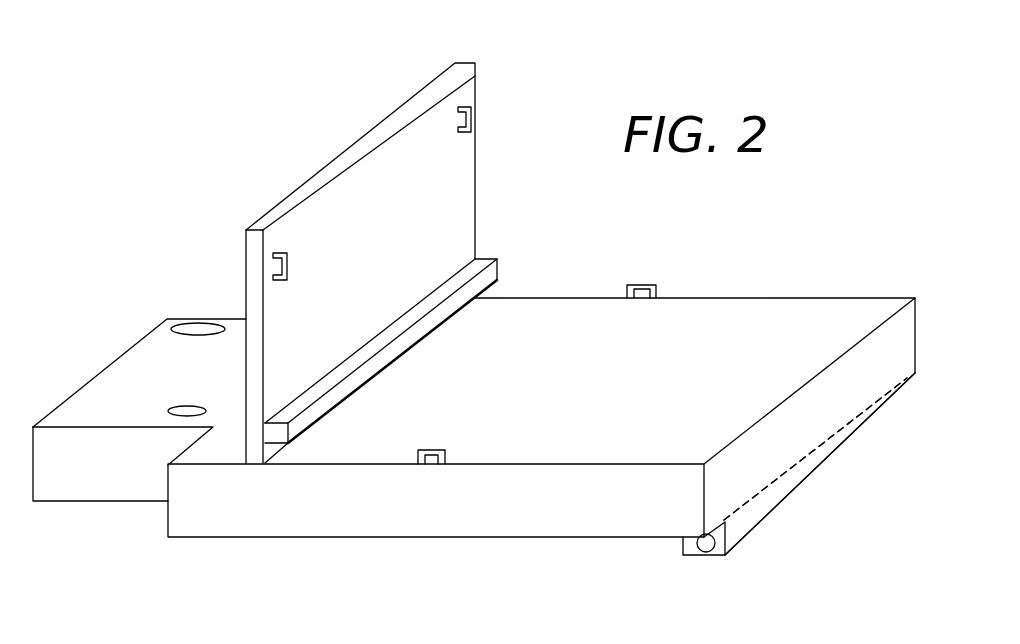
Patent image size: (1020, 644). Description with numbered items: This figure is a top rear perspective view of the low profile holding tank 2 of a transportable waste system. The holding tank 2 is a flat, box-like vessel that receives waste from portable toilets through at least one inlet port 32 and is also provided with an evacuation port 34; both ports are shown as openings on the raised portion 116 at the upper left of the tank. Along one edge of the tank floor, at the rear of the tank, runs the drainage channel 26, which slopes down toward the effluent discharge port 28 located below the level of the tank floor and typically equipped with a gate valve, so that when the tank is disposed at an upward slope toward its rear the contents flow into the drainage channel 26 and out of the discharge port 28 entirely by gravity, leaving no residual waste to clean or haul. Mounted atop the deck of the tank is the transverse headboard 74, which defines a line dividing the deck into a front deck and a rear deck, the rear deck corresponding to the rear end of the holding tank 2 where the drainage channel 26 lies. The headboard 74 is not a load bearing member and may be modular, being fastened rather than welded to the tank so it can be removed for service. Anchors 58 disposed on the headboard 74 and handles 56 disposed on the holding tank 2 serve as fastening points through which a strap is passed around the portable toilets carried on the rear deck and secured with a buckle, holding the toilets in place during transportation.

The holding tank 2 is at (756, 283).
The drainage channel 26 is at (738, 535).
The effluent discharge port 28 is at (698, 550).
The inlet port 32 is at (167, 408).
The evacuation port 34 is at (208, 323).
The handles 56 is at (639, 283).
The anchors 58 is at (283, 252).
The transverse headboard 74 is at (363, 143).
The block 116 is at (120, 509).